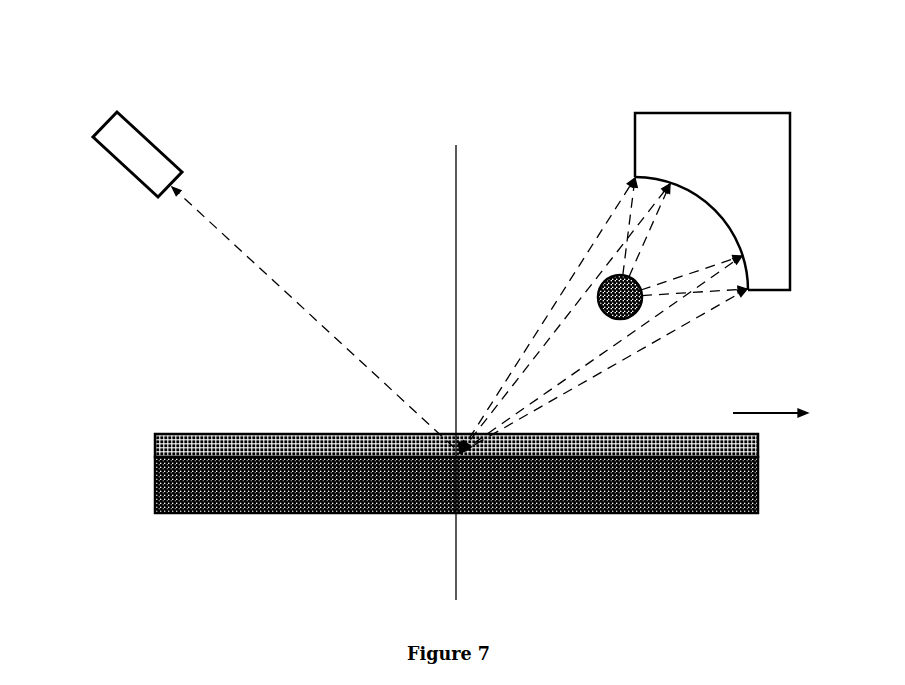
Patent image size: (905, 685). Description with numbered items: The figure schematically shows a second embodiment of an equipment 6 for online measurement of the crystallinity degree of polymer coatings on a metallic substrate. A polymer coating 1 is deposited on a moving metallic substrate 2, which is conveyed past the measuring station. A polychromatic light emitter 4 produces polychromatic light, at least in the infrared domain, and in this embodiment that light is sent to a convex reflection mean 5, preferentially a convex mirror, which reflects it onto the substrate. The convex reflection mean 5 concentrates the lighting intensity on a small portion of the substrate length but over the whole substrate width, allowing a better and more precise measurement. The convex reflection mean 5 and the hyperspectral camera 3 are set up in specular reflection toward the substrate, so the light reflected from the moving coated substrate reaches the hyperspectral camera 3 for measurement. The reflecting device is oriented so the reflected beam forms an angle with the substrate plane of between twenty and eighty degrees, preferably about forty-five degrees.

The polymer coating 1 is at (738, 448).
The moving metallic substrate 2 is at (738, 498).
The hyperspectral camera 3 is at (120, 148).
The polychromatic light emitter 4 is at (710, 310).
The convex reflection mean 5 is at (777, 235).
The equipment 6 is at (340, 126).